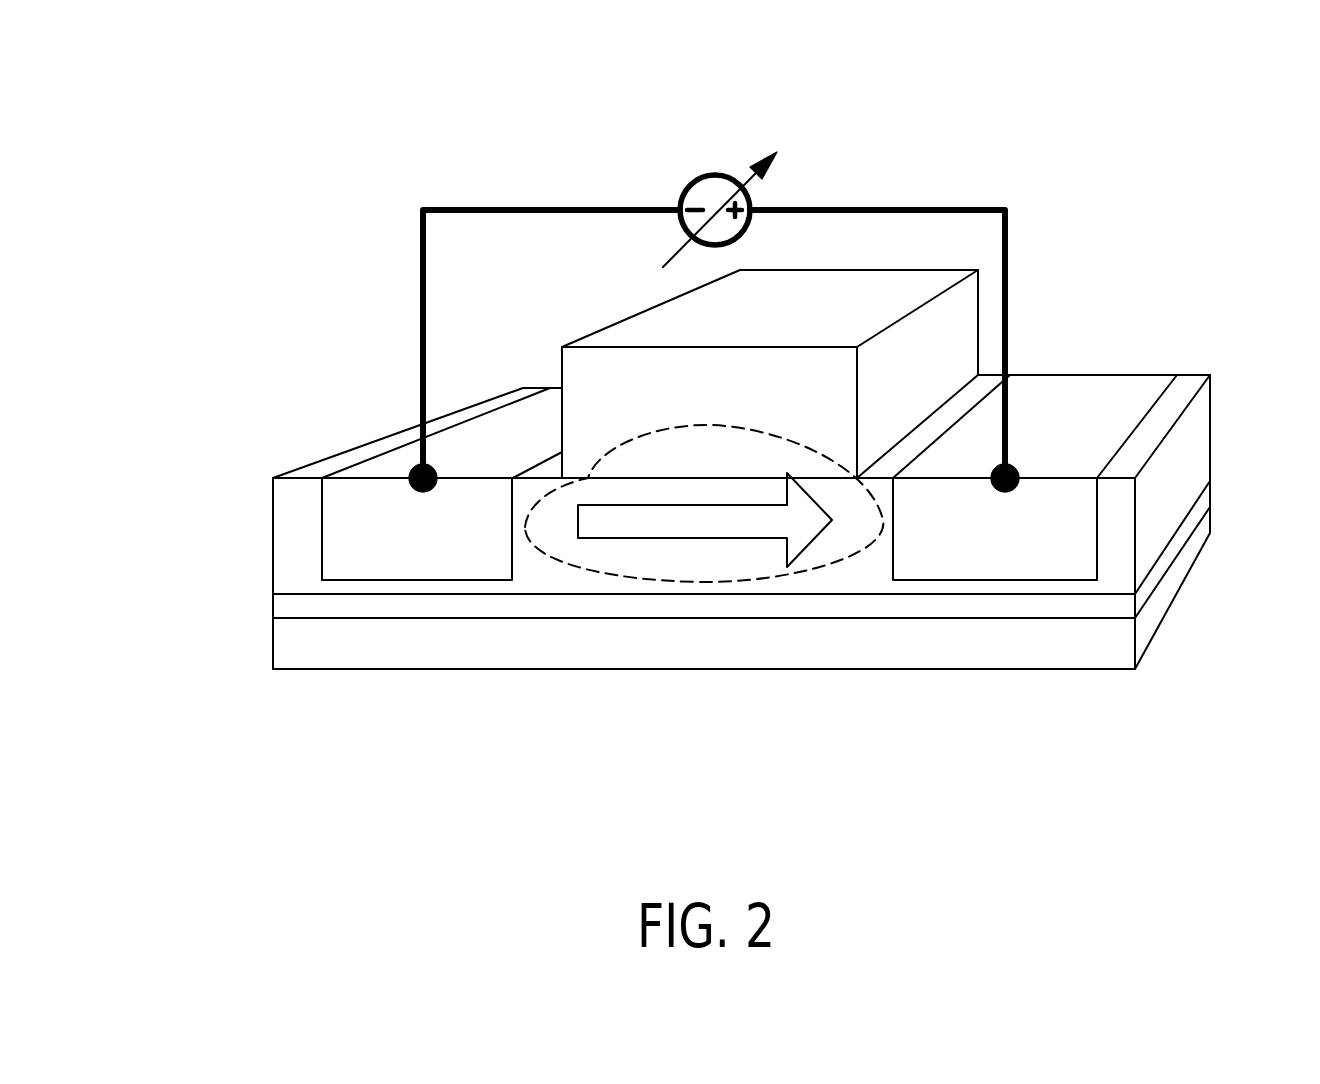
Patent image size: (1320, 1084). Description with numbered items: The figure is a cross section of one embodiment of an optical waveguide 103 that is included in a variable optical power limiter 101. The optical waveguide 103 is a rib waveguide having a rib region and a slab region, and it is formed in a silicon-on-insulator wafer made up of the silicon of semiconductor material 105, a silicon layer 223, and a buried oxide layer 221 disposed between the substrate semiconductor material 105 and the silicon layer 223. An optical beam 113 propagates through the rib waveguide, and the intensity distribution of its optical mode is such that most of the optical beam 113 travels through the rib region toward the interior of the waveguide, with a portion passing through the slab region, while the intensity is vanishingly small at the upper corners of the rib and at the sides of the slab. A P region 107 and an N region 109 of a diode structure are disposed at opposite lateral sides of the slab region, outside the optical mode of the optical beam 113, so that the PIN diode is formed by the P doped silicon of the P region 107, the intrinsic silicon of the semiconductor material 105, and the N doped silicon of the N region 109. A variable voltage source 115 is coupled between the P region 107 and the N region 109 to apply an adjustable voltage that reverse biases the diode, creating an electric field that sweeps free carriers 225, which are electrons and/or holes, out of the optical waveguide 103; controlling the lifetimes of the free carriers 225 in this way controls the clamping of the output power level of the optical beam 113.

The variable optical power limiter 101 is at (1097, 180).
The optical waveguide 103 is at (582, 379).
The semiconductor material 105 is at (557, 579).
The P region 107 is at (335, 529).
The N region 109 is at (1078, 550).
The optical beam 113 is at (843, 562).
The variable voltage source 115 is at (688, 177).
The buried oxide layer 221 is at (651, 604).
The silicon layer 223 is at (738, 642).
The free carriers 225 is at (720, 542).